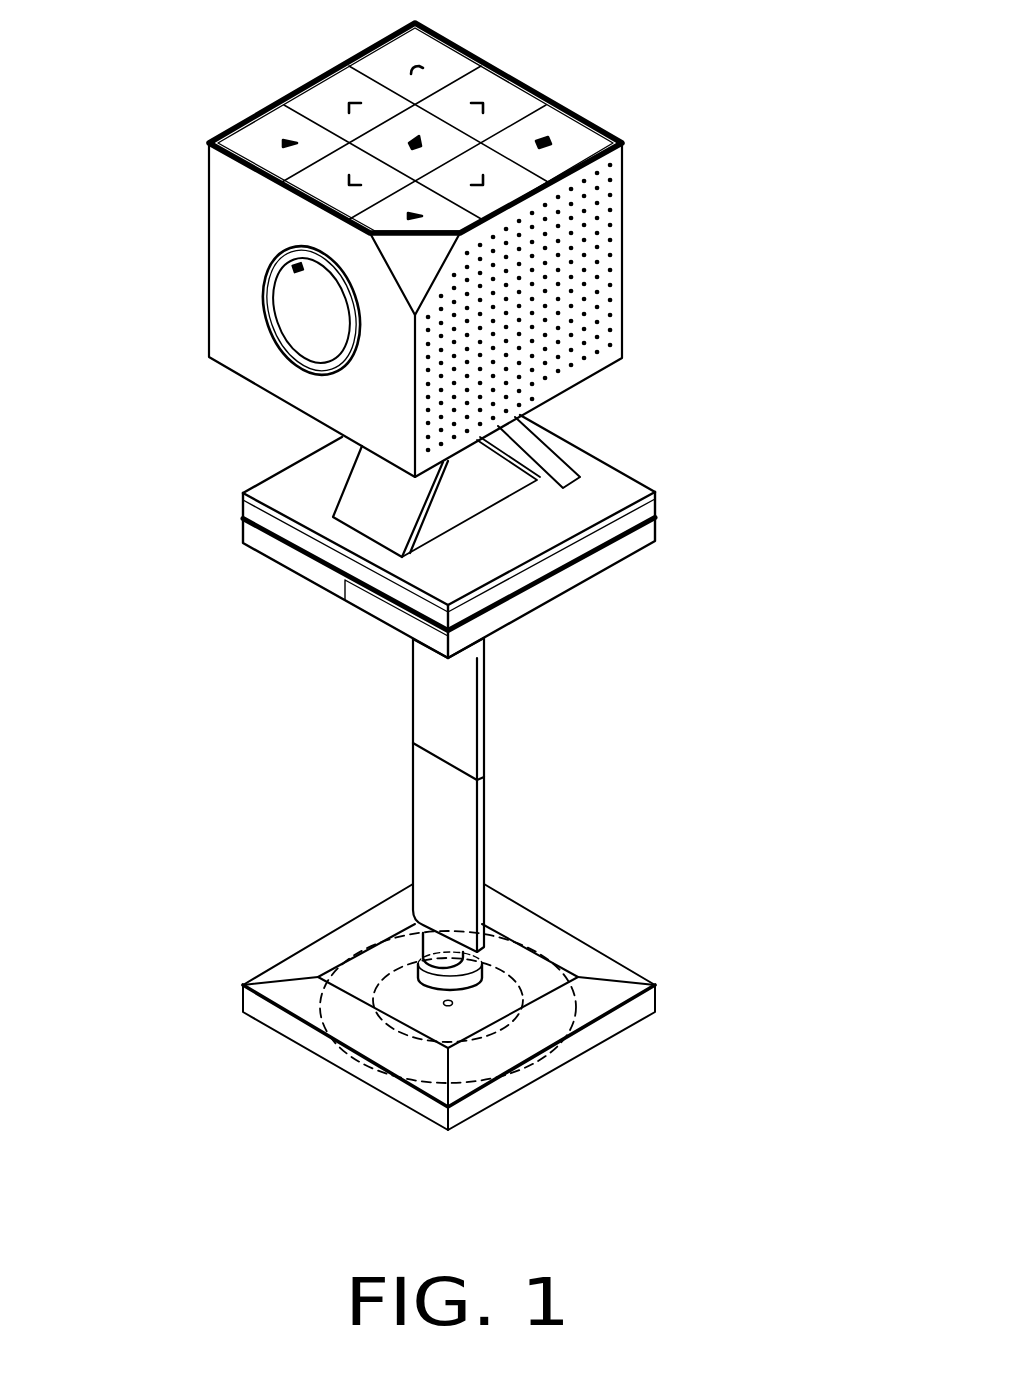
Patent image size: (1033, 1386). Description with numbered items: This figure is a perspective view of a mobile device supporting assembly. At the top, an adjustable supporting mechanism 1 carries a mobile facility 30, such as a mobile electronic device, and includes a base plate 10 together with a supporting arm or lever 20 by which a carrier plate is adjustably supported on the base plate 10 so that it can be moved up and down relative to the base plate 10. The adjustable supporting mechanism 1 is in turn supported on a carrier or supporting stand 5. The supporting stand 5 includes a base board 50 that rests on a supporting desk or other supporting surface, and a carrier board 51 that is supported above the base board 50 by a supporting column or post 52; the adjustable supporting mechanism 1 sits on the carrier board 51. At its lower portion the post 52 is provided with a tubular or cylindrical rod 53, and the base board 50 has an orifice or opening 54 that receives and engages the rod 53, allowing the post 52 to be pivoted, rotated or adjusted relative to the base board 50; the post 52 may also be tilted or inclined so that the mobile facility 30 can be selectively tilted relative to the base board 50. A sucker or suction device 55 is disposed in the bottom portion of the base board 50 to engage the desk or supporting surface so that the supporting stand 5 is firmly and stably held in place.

The adjustable supporting arm or mechanism 1 is at (205, 508).
The carrier or supporting stand 5 is at (630, 905).
The base plate 10 is at (603, 482).
The supporting arm or lever 20 is at (363, 485).
The mobile facility 30 is at (503, 97).
The base board 50 is at (262, 1012).
The carrier board 51 is at (627, 545).
The supporting column or post 52 is at (483, 825).
The tubular or cylindrical tube or rod 53 is at (370, 950).
The orifice or opening 54 is at (490, 940).
The sucker or suction device 55 is at (483, 1060).